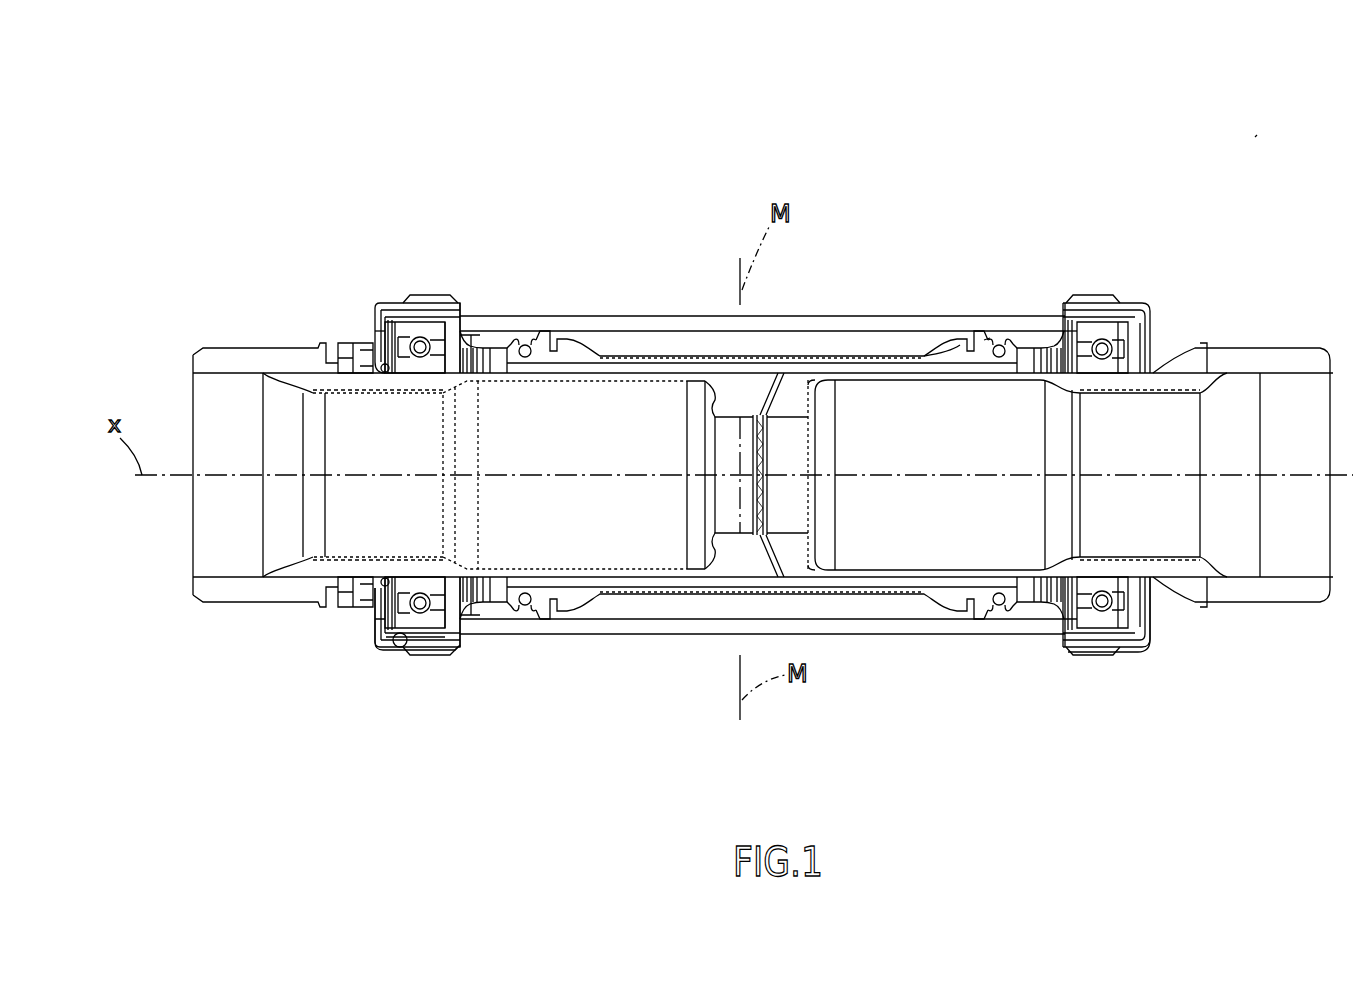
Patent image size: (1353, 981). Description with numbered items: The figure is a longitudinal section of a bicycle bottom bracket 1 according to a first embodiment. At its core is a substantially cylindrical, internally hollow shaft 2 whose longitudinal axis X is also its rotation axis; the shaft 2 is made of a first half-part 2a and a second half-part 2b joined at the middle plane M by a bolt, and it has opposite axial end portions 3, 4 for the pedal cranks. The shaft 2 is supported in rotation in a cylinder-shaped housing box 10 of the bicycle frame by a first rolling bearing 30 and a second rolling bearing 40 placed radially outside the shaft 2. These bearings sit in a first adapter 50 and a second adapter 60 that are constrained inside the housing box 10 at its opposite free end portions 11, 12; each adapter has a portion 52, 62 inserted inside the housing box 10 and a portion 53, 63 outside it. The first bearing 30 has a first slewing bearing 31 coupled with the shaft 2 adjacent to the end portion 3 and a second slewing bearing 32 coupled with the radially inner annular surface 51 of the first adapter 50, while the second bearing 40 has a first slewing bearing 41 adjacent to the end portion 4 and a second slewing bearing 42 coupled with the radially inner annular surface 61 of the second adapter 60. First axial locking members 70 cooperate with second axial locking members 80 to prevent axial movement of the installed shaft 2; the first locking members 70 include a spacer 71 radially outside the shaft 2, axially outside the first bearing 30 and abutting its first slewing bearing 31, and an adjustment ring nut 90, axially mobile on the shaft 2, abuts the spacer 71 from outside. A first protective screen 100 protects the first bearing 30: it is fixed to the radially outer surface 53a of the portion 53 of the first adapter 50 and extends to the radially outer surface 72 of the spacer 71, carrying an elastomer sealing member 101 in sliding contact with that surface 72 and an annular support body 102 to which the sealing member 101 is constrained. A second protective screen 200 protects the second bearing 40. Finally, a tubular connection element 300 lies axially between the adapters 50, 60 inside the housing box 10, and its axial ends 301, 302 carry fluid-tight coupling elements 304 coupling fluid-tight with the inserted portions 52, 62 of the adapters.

The bottom bracket 1 is at (1262, 130).
The shaft 2 is at (640, 560).
The first half-part 2a is at (509, 475).
The second half-part 2b is at (1004, 475).
The axial end portion 3 is at (205, 598).
The axial end portion 4 is at (1268, 590).
The housing box 10 is at (850, 308).
The free end portion 11 is at (608, 316).
The free end portion 12 is at (1036, 316).
The first rolling bearing 30 is at (457, 632).
The first slewing bearing 31 is at (330, 314).
The second slewing bearing 32 is at (401, 303).
The second rolling bearing 40 is at (1100, 632).
The first slewing bearing 41 is at (1071, 302).
The second slewing bearing 42 is at (1200, 348).
The first adapter 50 is at (425, 285).
The radially inner annular surface 51 is at (478, 312).
The portion inserted inside the housing box 52 is at (540, 310).
The portion outside of the housing box 53 is at (456, 306).
The radially outer surface 53a is at (381, 306).
The second adapter 60 is at (1104, 285).
The radially inner annular surface 61 is at (1174, 312).
The portion inserted inside the housing box 62 is at (1027, 316).
The portion outside of the housing box 63 is at (1148, 312).
The first axial locking members 70 is at (372, 373).
The spacer 71 is at (348, 622).
The radially outer surface 72 is at (375, 312).
The second axial locking members 80 is at (457, 622).
The adjustment ring nut 90 is at (260, 314).
The first protective screen 100 is at (380, 662).
The sealing member 101 is at (345, 612).
The annular support body 102 is at (422, 635).
The second protective screen 200 is at (1140, 652).
The tubular connection element 300 is at (680, 322).
The axial end 301 is at (585, 620).
The axial end 302 is at (936, 316).
The fluid-tight coupling elements 304 is at (998, 318).